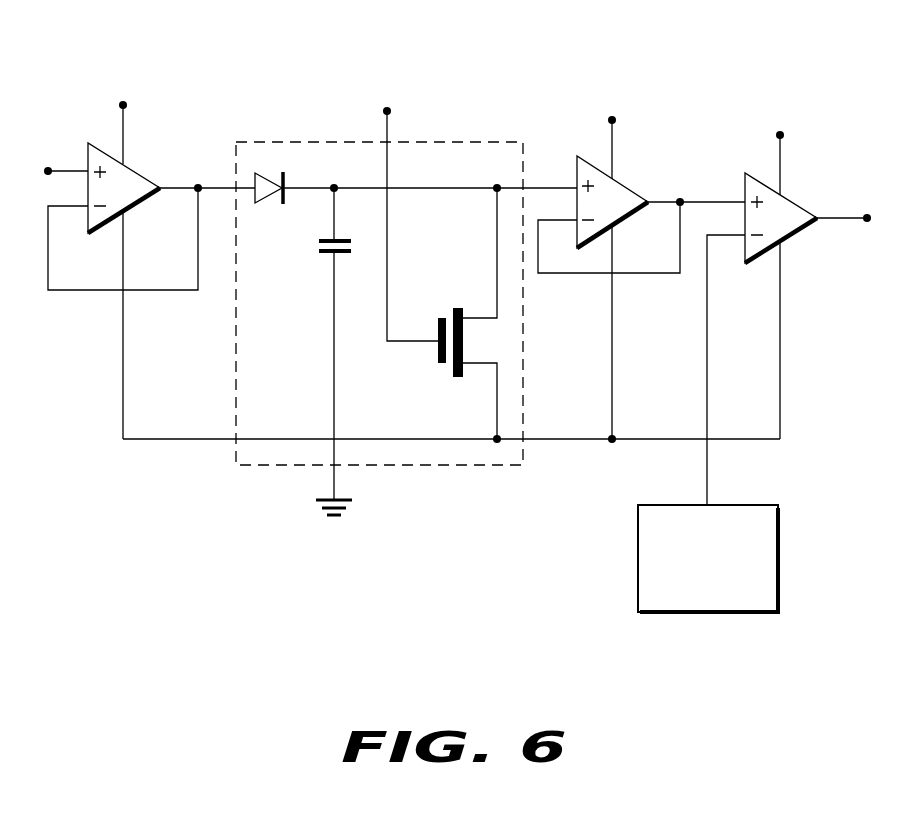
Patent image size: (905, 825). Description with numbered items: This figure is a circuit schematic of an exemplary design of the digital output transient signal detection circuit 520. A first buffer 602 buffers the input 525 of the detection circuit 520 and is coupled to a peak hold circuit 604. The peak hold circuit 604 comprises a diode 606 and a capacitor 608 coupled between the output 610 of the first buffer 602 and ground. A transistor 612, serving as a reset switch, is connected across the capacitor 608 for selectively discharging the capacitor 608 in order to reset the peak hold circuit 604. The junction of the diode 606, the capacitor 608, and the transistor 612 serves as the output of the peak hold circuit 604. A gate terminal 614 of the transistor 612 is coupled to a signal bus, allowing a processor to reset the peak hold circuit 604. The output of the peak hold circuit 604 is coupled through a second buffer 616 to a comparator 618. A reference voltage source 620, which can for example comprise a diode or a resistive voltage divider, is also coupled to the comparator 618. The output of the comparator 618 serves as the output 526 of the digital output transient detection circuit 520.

The digital output transient signal detection circuit 520 is at (664, 56).
The input 525 is at (48, 167).
The first buffer 602 is at (133, 211).
The output of the first buffer 610 is at (199, 184).
The peak hold circuit 604 is at (287, 141).
The diode 606 is at (268, 199).
The capacitor 608 is at (330, 257).
The gate terminal 614 is at (387, 107).
The transistor 612 is at (442, 366).
The second buffer 616 is at (645, 199).
The comparator 618 is at (804, 208).
The output 526 is at (867, 222).
The reference voltage source 620 is at (635, 562).